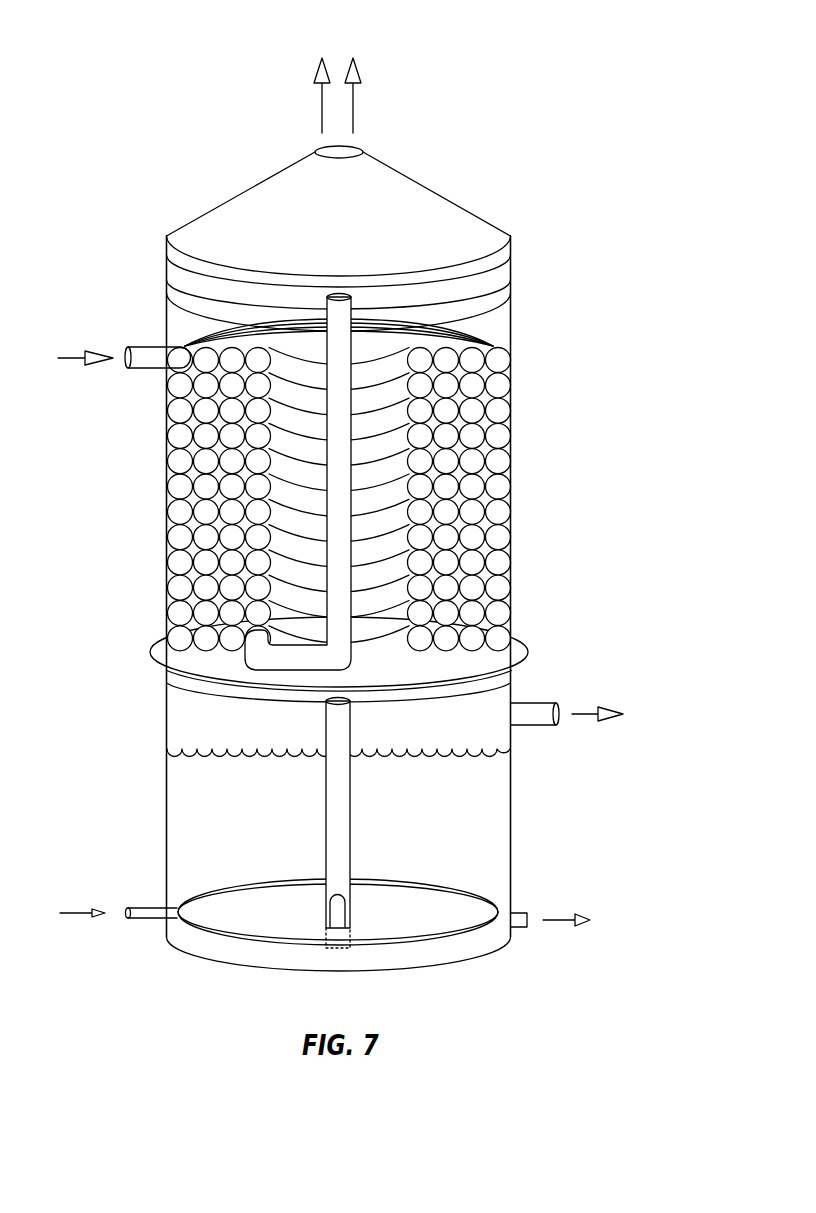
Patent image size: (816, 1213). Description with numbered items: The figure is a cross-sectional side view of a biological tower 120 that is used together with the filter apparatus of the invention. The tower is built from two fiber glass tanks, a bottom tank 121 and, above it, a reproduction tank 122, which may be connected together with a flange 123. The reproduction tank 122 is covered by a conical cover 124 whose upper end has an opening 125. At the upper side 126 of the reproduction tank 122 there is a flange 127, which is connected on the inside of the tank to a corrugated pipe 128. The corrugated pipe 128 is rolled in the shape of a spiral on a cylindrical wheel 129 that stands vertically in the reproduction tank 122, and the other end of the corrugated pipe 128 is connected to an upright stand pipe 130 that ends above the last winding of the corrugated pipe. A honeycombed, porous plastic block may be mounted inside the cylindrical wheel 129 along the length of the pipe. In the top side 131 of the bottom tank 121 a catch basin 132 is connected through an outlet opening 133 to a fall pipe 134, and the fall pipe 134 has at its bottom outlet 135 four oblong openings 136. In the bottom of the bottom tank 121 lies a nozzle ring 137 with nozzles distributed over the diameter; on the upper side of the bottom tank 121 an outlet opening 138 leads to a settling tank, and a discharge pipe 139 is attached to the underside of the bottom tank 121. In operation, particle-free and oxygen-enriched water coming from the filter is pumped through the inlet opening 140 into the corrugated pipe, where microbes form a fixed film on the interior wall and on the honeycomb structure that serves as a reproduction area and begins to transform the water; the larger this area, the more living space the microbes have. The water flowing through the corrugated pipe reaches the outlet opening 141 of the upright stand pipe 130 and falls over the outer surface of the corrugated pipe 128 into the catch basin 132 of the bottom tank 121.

The biological tower 120 is at (598, 70).
The bottom tank 121 is at (512, 693).
The reproduction tank 122 is at (512, 523).
The flange 123 is at (155, 643).
The conical cover 124 is at (507, 234).
The opening 125 is at (356, 147).
The upper side 126 is at (165, 308).
The flange 127 is at (153, 345).
The corrugated pipe 128 is at (503, 367).
The cylindrical wheel 129 is at (490, 342).
The upright stand pipe 130 is at (352, 300).
The top side 131 is at (173, 677).
The catch basin 132 is at (183, 685).
The outlet opening 133 is at (353, 707).
The fall pipe 134 is at (322, 707).
The bottom outlet 135 is at (352, 938).
The oblong openings 136 is at (345, 905).
The nozzle ring 137 is at (407, 880).
The outlet opening 138 is at (558, 725).
The discharge pipe 139 is at (517, 912).
The inlet opening 140 is at (125, 367).
The outlet opening 141 is at (332, 293).